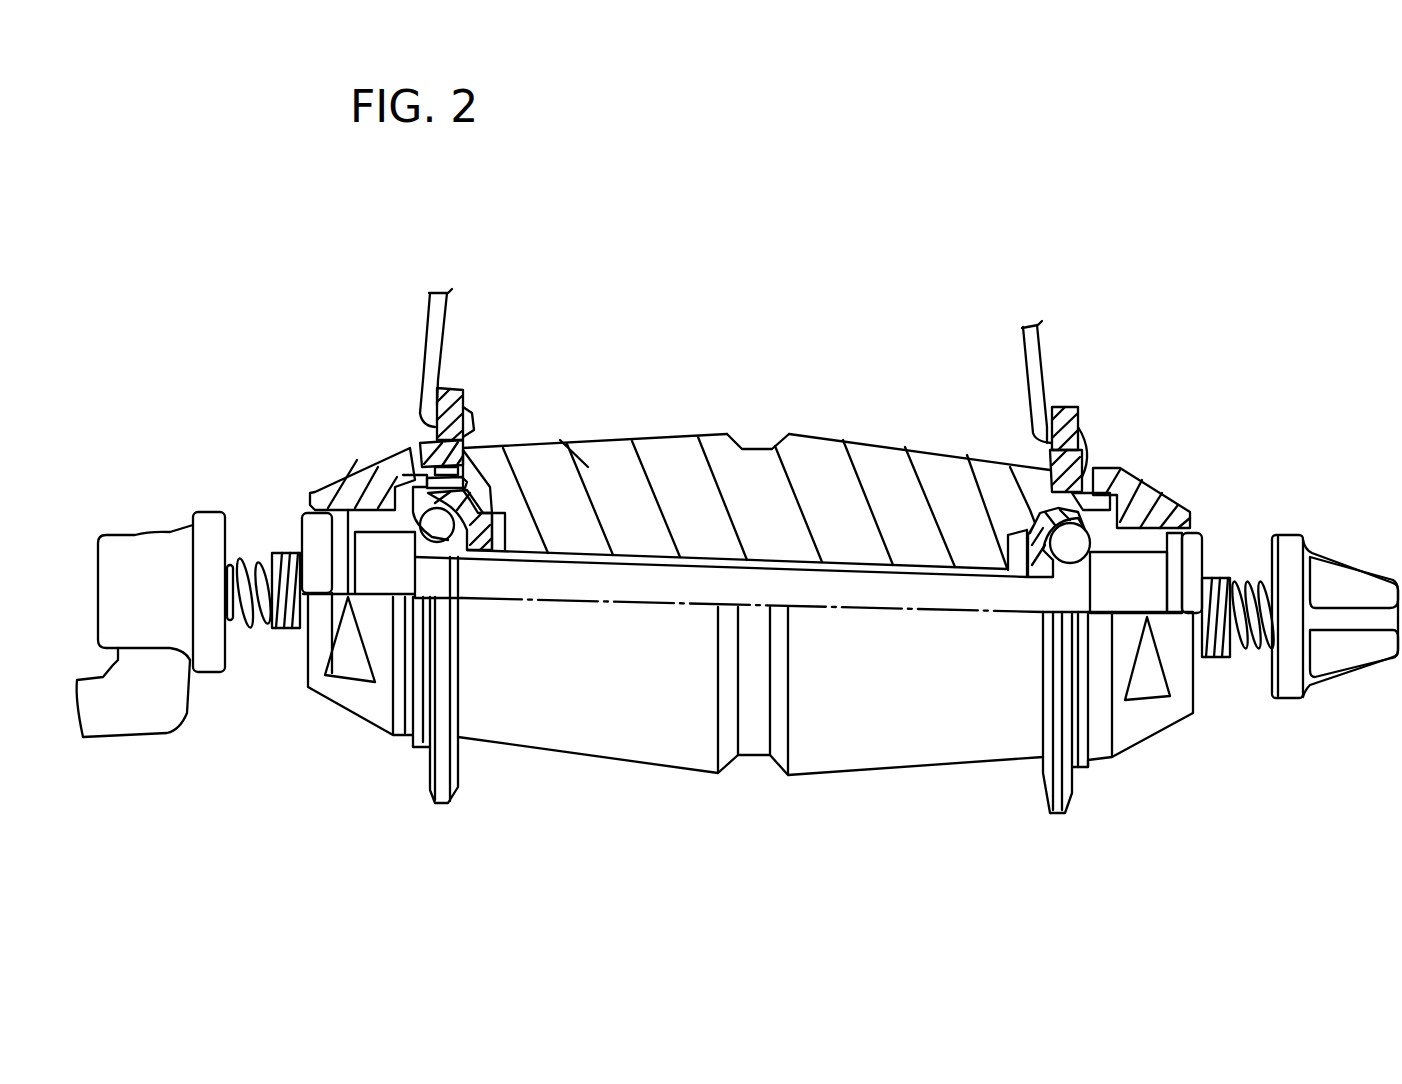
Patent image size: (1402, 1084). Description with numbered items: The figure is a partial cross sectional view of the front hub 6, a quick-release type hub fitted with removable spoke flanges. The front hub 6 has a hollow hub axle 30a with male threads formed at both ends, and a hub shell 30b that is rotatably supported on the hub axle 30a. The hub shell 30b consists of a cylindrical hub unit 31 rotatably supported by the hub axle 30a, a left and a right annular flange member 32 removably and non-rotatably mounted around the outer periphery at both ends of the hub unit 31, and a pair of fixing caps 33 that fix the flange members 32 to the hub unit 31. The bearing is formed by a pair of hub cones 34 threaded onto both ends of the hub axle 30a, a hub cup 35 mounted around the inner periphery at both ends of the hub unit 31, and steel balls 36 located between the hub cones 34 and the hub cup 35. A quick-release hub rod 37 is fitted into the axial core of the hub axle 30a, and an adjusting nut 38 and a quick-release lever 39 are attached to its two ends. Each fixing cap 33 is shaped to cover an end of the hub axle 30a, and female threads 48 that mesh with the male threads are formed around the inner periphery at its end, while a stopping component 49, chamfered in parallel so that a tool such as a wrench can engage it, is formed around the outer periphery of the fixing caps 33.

The front hub 6 is at (750, 407).
The hub axle 30a is at (1220, 558).
The hub shell 30b is at (823, 432).
The hub unit 31 is at (871, 457).
The flange member 32 is at (458, 381).
The fixing cap 33 is at (360, 545).
The hub cone 34 is at (337, 490).
The hub cup 35 is at (467, 480).
The steel balls 36 is at (394, 500).
The quick-release hub rod 37 is at (1253, 577).
The adjusting nut 38 is at (1350, 577).
The quick-release lever 39 is at (120, 543).
The female threads 48 is at (397, 450).
The stopping component 49 is at (357, 667).